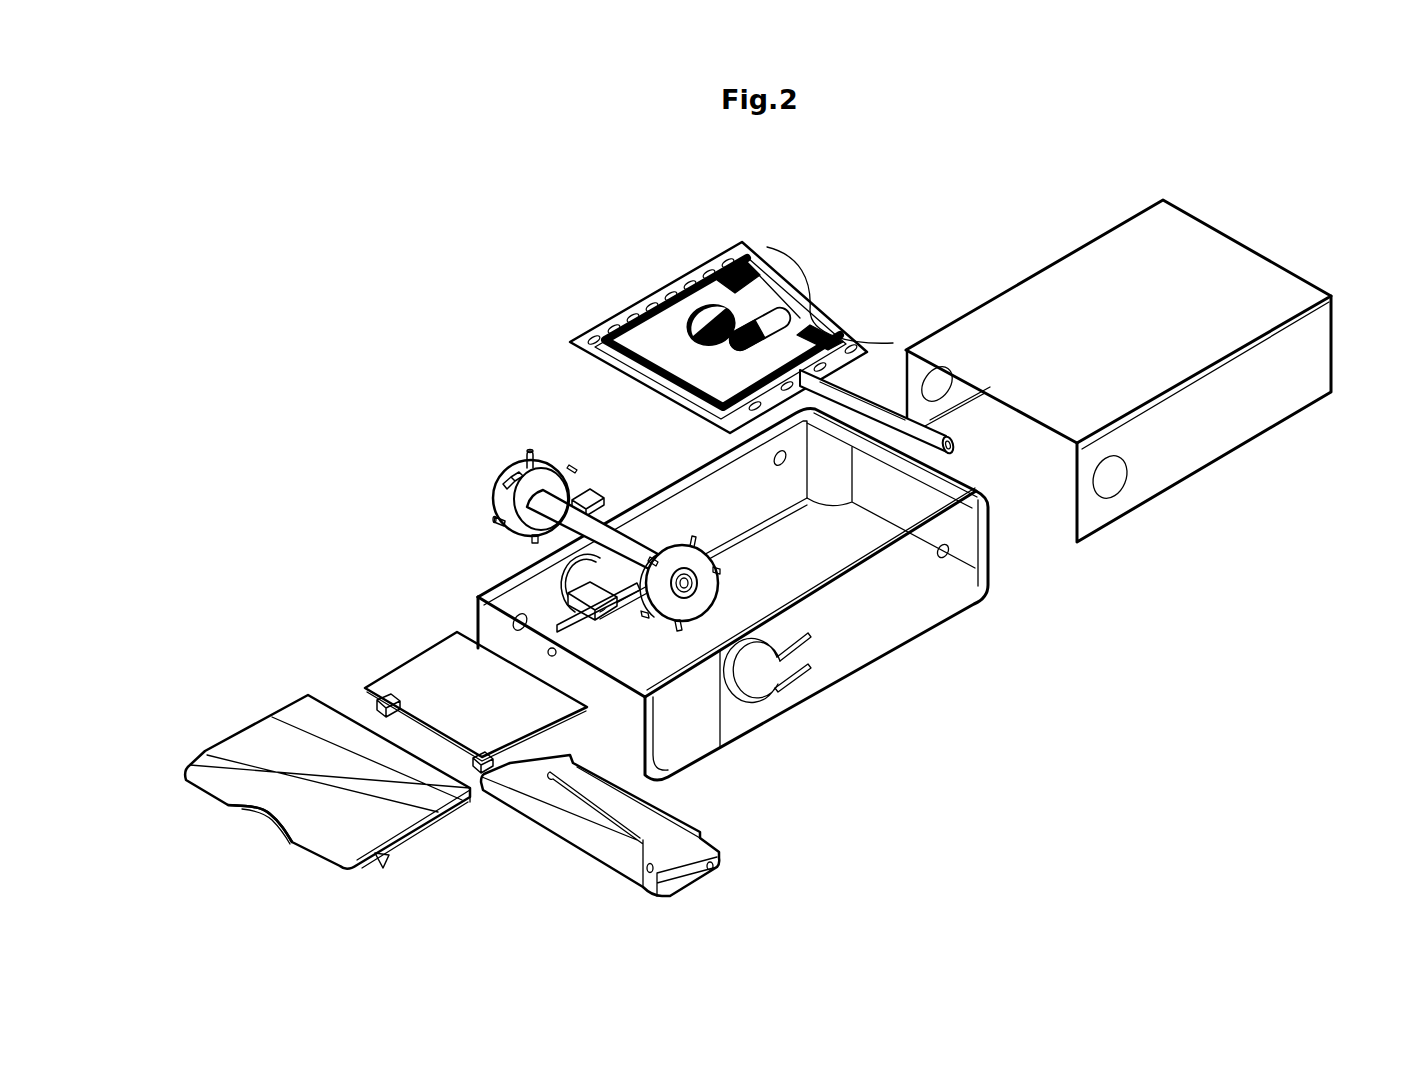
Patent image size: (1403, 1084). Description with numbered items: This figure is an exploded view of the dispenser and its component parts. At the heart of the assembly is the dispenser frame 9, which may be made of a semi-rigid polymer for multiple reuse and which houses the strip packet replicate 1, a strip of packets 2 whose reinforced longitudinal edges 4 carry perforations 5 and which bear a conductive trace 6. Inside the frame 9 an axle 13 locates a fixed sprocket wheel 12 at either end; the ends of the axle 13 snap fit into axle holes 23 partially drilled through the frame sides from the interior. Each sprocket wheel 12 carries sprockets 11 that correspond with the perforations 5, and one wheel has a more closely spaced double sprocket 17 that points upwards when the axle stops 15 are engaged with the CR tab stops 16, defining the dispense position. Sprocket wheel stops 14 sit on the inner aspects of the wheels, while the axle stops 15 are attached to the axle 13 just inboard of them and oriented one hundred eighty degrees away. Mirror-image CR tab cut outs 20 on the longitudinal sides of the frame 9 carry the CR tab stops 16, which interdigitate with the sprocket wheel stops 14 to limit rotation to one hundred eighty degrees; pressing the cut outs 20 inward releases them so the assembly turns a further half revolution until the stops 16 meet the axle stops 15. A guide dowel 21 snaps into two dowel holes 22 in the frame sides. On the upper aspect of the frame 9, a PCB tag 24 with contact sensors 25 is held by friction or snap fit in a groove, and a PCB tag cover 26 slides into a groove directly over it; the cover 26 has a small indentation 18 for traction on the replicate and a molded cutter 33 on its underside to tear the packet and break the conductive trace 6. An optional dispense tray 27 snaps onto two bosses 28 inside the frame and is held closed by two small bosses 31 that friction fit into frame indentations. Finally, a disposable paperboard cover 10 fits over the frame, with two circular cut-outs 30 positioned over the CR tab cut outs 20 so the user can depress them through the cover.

The strip packet replicate 1 is at (768, 248).
The packet 2 is at (768, 300).
The longitudinal edges 4 is at (700, 283).
The perforations 5 is at (596, 330).
The conductive trace 6 is at (838, 360).
The dispenser frame 9 is at (888, 622).
The disposable paperboard cover 10 is at (1022, 305).
The sprockets 11 is at (531, 455).
The sprocket wheel 12 is at (520, 460).
The axle 13 is at (560, 530).
The sprocket wheel stops 14 is at (500, 522).
The axle stops 15 is at (582, 497).
The CR tab stop 16 is at (572, 612).
The double sprocket 17 is at (503, 478).
The indentation 18 is at (270, 812).
The CR tab cut outs 20 is at (760, 686).
The guide dowel 21 is at (952, 447).
The dowel holes 22 is at (948, 552).
The axle holes 23 is at (518, 618).
The PCB tag 24 is at (420, 650).
The contact sensors 25 is at (373, 708).
The PCB tag cover 26 is at (228, 736).
The dispense tray 27 is at (690, 880).
The bosses 28 is at (553, 656).
The circular cut-outs 30 is at (1110, 480).
The small bosses 31 is at (648, 886).
The molded cutter 33 is at (383, 862).